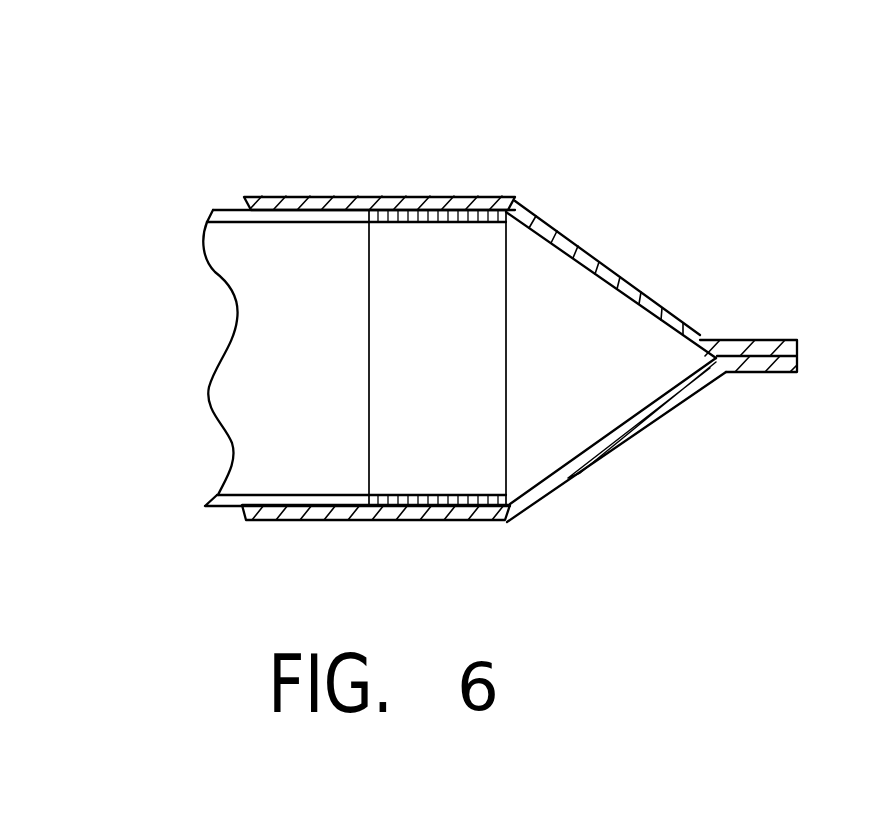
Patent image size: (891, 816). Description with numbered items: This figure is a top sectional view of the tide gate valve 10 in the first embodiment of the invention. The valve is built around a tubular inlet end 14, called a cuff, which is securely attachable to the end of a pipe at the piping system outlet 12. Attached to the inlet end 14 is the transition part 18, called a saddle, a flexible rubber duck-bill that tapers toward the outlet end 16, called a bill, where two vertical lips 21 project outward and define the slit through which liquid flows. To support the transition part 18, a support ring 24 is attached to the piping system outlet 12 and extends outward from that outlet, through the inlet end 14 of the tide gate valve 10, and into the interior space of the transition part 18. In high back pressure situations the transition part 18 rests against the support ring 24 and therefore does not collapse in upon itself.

The tide gate valve 10 is at (500, 352).
The piping system outlet 12 is at (223, 209).
The inlet end 14 is at (287, 521).
The outlet end 16 is at (775, 382).
The transition part 18 is at (562, 232).
The vertical lips 21 is at (772, 340).
The support ring 24 is at (473, 196).